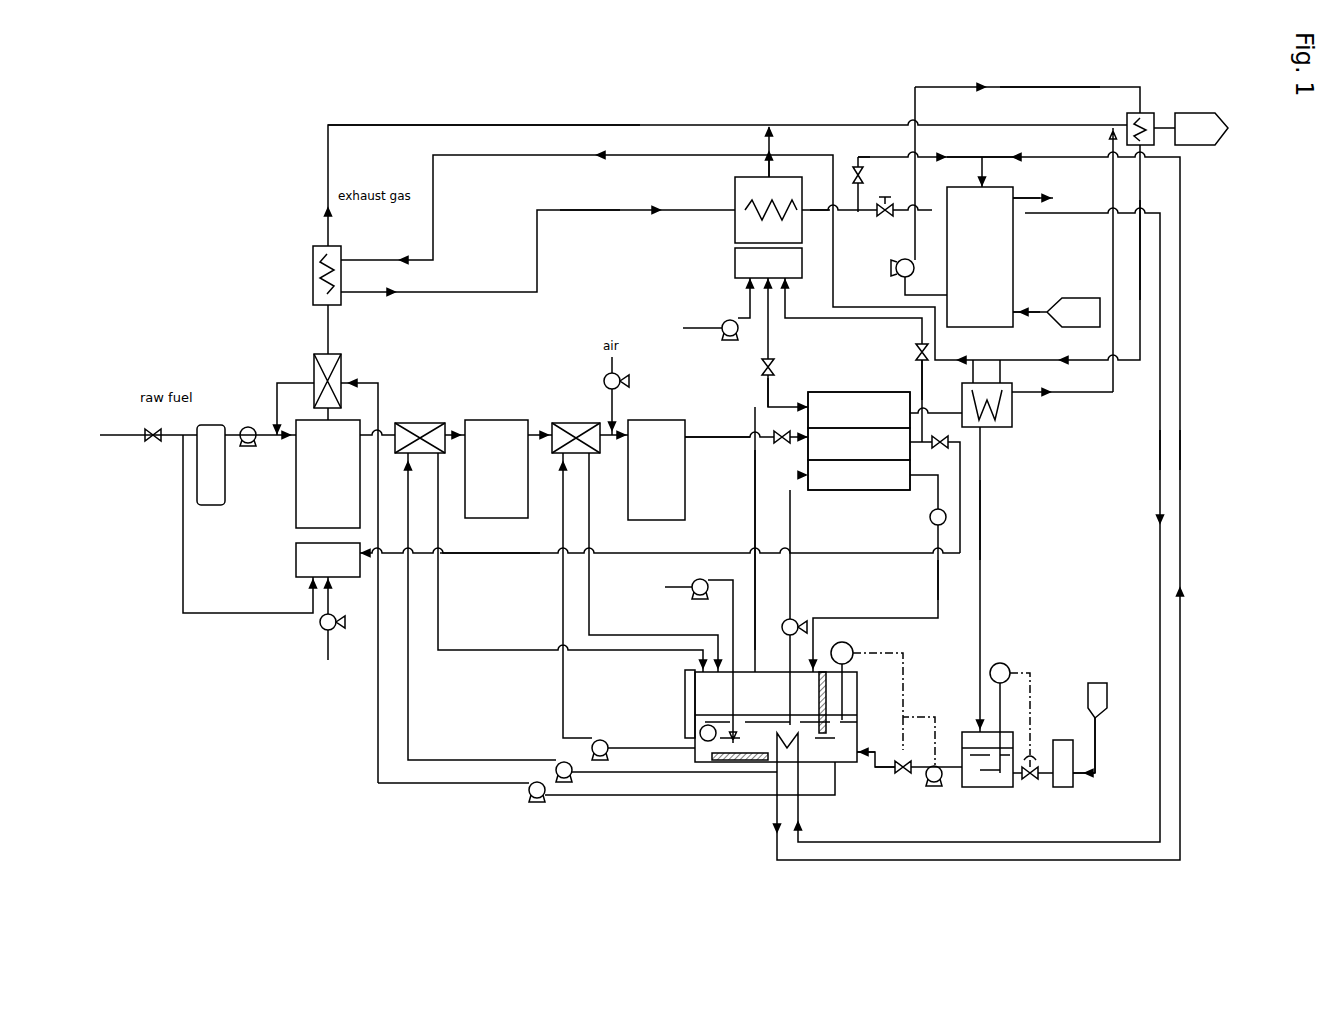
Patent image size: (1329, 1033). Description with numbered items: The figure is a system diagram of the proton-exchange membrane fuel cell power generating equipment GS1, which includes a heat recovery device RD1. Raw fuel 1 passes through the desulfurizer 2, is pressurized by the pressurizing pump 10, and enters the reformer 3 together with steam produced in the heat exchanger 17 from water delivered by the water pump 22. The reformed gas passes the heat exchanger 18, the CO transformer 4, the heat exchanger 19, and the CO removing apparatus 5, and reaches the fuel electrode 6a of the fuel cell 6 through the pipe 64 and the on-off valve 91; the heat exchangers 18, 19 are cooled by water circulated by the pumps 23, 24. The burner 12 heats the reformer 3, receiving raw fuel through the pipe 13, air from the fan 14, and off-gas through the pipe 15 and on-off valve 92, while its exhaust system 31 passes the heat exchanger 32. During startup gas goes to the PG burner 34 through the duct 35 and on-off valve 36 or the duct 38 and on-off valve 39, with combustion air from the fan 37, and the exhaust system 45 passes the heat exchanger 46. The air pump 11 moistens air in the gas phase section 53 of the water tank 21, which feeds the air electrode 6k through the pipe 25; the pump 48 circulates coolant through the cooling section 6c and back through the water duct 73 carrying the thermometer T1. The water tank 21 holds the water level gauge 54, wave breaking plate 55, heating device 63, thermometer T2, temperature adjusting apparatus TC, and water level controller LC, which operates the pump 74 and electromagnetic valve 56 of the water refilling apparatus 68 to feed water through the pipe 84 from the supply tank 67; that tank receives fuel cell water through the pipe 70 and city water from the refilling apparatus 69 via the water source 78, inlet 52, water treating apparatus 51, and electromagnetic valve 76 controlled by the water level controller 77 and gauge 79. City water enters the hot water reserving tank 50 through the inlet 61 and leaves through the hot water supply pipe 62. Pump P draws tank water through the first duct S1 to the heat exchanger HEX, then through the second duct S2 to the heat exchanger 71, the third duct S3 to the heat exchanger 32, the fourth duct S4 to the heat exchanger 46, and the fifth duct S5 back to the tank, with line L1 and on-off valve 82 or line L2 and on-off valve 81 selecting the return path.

The raw fuel 1 is at (130, 428).
The desulfurizer 2 is at (208, 505).
The reformer 3 is at (296, 497).
The CO transformer 4 is at (500, 518).
The CO removing apparatus 5 is at (665, 520).
The fuel cell 6 is at (850, 392).
The air electrode 6k is at (818, 393).
The fuel electrode 6a is at (808, 448).
The cooling section 6c is at (818, 490).
The pressurizing pump 10 is at (246, 427).
The air pump 11 is at (693, 593).
The burner 12 is at (296, 568).
The pipe 13 is at (183, 572).
The fan 14 is at (320, 628).
The pipe 15 is at (485, 556).
The heat exchanger 17 is at (314, 370).
The heat exchanger 18 is at (422, 423).
The heat exchanger 19 is at (563, 423).
The water tank 21 is at (858, 725).
The water pump 22 is at (529, 795).
The pump 23 is at (557, 763).
The pump 24 is at (604, 741).
The pipe 25 is at (754, 507).
The exhaust system 31 is at (328, 326).
The heat exchanger 32 is at (313, 262).
The PG burner 34 is at (735, 268).
The duct 35 is at (766, 392).
The on-off valve 36 is at (760, 367).
The fan 37 is at (722, 337).
The duct 38 is at (920, 376).
The on-off valve 39 is at (917, 352).
The exhaust system 45 is at (766, 163).
The heat exchanger 46 is at (735, 200).
The pump 48 is at (796, 620).
The hot water reserving tank 50 is at (1013, 242).
The water treating apparatus 51 is at (1063, 787).
The inlet 52 is at (1098, 745).
The gas phase section 53 is at (770, 672).
The water level gauge 54 is at (828, 700).
The wave breaking plate 55 is at (808, 705).
The electromagnetic valve 56 is at (905, 778).
The inlet 61 is at (1030, 314).
The hot water supply pipe 62 is at (1030, 205).
The heating device 63 is at (737, 762).
The pipe 64 is at (718, 441).
The supply tank 67 is at (968, 740).
The water refilling apparatus 68 is at (888, 775).
The city water refilling apparatus 69 is at (1103, 780).
The pipe 70 is at (982, 525).
The heat exchanger 71 is at (1012, 425).
The water duct 73 is at (940, 588).
The pump 74 is at (938, 783).
The electromagnetic valve 76 is at (1035, 745).
The water level controller 77 is at (1003, 664).
The water source 78 is at (1098, 683).
The water level gauge 79 is at (1000, 775).
The on-off valve 81 is at (863, 177).
The on-off valve 82 is at (888, 220).
The pipe 84 is at (870, 760).
The on-off valve 91 is at (778, 437).
The on-off valve 92 is at (944, 447).
The proton-exchange membrane fuel cell power generating equipment GS1 is at (268, 312).
The first duct S1 is at (1050, 87).
The second duct S2 is at (1142, 278).
The third duct S3 is at (640, 127).
The fourth duct S4 is at (592, 212).
The fifth duct S5 is at (818, 207).
The line L1 is at (1160, 450).
The line L2 is at (880, 158).
The heat recovery device RD1 is at (1022, 122).
The heat exchanger HEX is at (1125, 115).
The pump P is at (897, 274).
The thermometer T1 is at (930, 521).
The thermometer T2 is at (705, 741).
The temperature adjusting apparatus TC is at (686, 696).
The water level controller LC is at (853, 653).